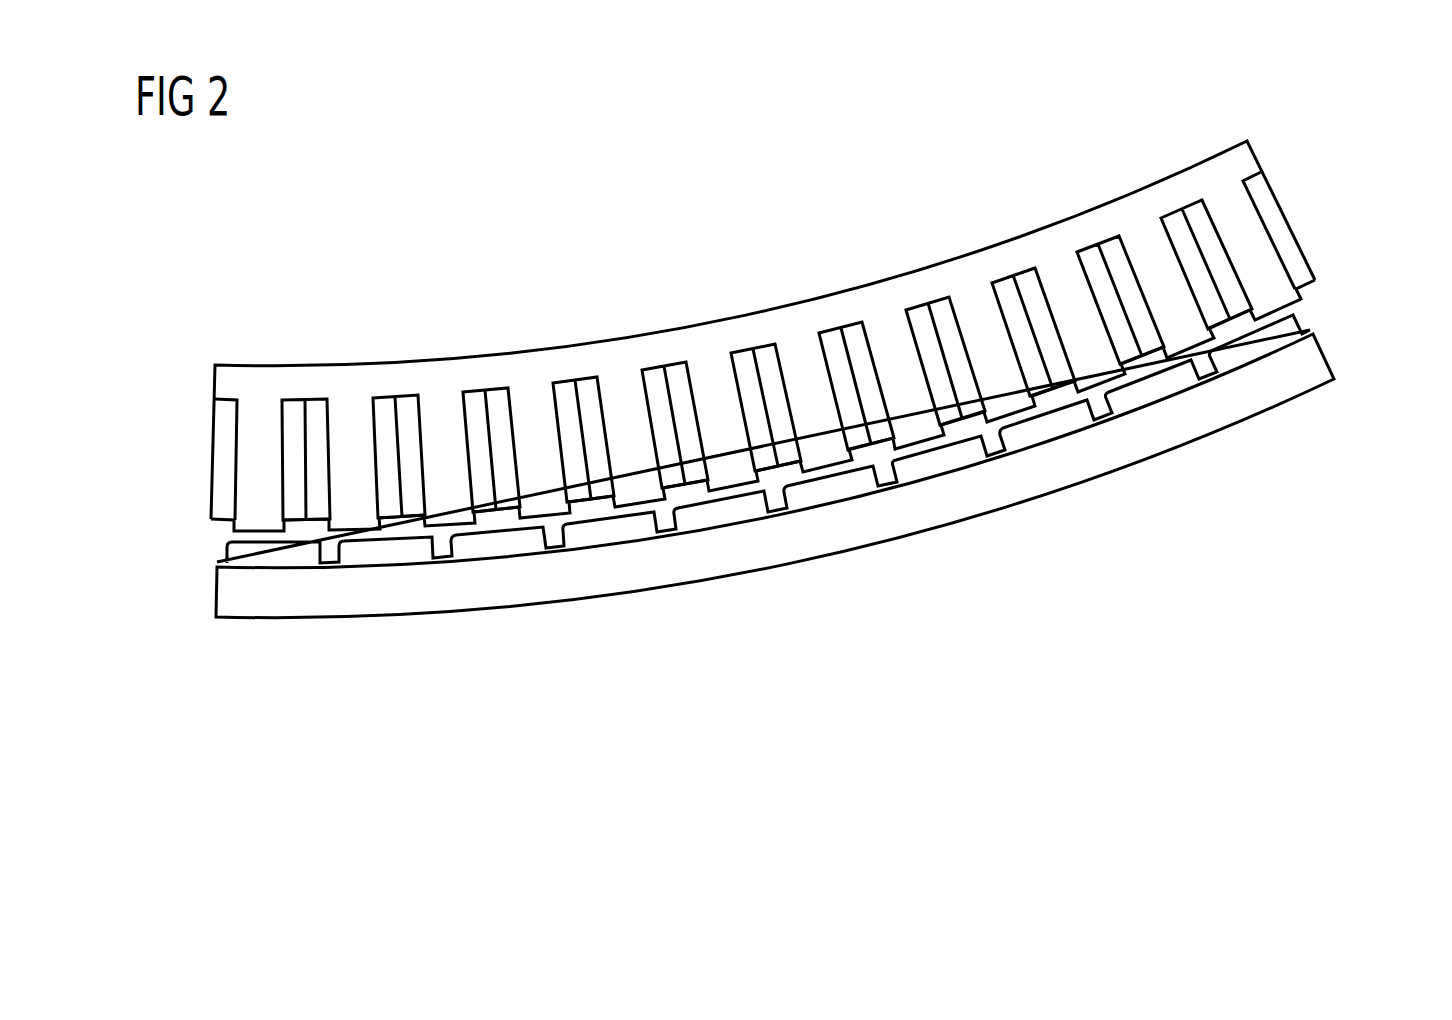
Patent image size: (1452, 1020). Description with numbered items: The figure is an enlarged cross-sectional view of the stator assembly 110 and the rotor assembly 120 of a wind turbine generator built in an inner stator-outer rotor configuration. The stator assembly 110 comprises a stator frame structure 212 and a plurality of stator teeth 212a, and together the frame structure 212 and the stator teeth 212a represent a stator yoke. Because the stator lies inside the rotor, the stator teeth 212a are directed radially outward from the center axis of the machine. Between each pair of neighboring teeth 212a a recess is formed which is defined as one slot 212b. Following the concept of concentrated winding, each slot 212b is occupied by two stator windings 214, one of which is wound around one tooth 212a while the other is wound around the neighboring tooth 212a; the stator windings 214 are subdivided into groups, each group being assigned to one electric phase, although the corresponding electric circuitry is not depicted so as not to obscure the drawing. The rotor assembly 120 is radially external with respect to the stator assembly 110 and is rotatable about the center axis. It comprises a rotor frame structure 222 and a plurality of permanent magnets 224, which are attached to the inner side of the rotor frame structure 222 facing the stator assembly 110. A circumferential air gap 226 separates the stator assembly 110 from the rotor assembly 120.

The stator assembly 110 is at (741, 371).
The rotor assembly 120 is at (825, 476).
The stator frame structure 212 is at (754, 306).
The stator teeth 212a is at (1140, 238).
The slot 212b is at (1243, 341).
The stator windings 214 is at (590, 388).
The rotor frame structure 222 is at (835, 540).
The permanent magnets 224 is at (1267, 352).
The air gap 226 is at (1311, 310).